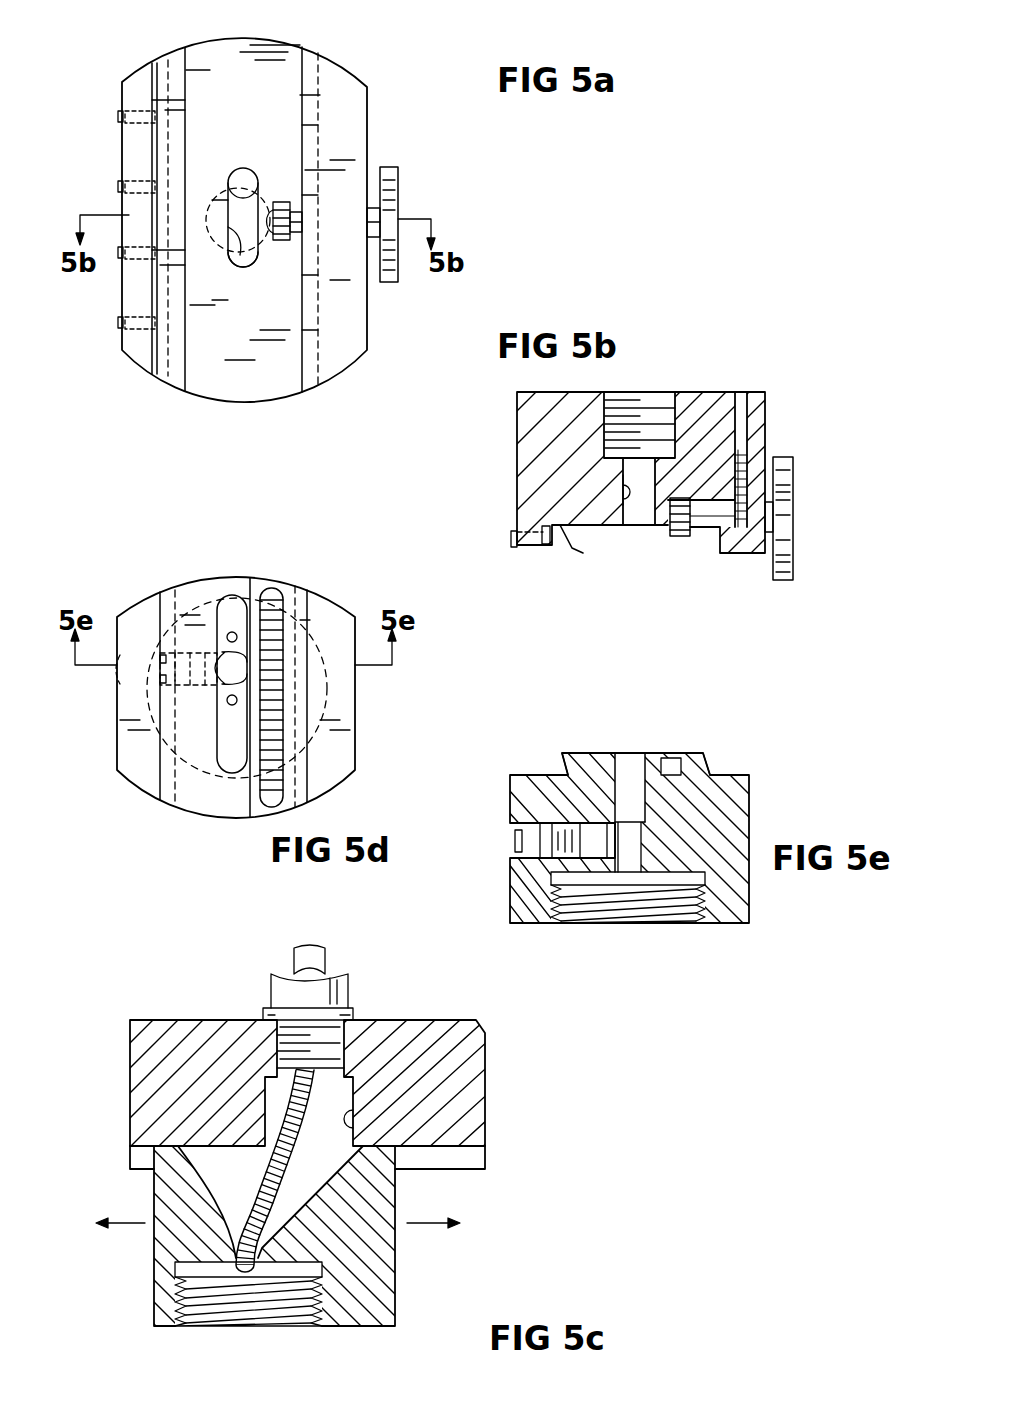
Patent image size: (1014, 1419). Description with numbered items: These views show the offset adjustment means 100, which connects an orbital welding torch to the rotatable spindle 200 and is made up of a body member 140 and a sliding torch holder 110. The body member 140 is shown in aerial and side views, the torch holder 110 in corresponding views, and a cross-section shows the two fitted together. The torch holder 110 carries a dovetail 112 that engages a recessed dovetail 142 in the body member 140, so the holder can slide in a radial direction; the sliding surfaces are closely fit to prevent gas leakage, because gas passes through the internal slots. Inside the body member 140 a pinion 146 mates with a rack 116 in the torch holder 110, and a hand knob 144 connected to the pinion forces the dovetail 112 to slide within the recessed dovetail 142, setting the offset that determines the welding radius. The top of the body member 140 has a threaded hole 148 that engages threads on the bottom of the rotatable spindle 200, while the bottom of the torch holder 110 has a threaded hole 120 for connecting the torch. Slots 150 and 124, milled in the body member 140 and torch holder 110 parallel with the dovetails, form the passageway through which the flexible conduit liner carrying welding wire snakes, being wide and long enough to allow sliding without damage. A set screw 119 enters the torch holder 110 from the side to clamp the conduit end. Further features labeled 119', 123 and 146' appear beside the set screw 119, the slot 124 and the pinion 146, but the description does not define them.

In FIG. 5C, the offset adjustment means 100 is at (120, 998).
In FIG. 5D, the sliding torch holder 110 is at (251, 673).
In FIG. 5E, the sliding torch holder 110 is at (664, 824).
In FIG. 5C, the sliding torch holder 110 is at (405, 1281).
In FIG. 5D, the dovetail 112 is at (162, 780).
In FIG. 5E, the dovetail 112 is at (562, 751).
In FIG. 5D, the rack 116 is at (272, 595).
In FIG. 5E, the rack 116 is at (669, 765).
In FIG. 5D, the set screw 119 is at (144, 692).
In FIG. 5E, the set screw 119 is at (537, 861).
In FIG. 5D, the detent 119' is at (106, 633).
In FIG. 5E, the detent 119' is at (512, 819).
In FIG. 5D, the threaded hole 120 is at (178, 585).
In FIG. 5E, the threaded hole 120 is at (690, 908).
In FIG. 5C, the threaded hole 120 is at (207, 1315).
In FIG. 5D, the apertures 123 is at (232, 632).
In FIG. 5D, the slot 124 is at (245, 764).
In FIG. 5E, the slot 124 is at (634, 773).
In FIG. 5C, the slot 124 is at (323, 1171).
In FIG. 5A, the body member 140 is at (305, 216).
In FIG. 5B, the body member 140 is at (646, 451).
In FIG. 5C, the body member 140 is at (120, 1086).
In FIG. 5A, the recessed dovetail 142 is at (190, 58).
In FIG. 5B, the recessed dovetail 142 is at (578, 548).
In FIG. 5C, the recessed dovetail 142 is at (478, 1170).
In FIG. 5A, the hand knob 144 is at (399, 253).
In FIG. 5B, the hand knob 144 is at (793, 490).
In FIG. 5A, the pinion 146 is at (285, 244).
In FIG. 5B, the pinion 146 is at (665, 533).
In FIG. 5A, the screw bore 146' is at (281, 189).
In FIG. 5B, the screw bore 146' is at (718, 488).
In FIG. 5A, the threaded hole 148 is at (232, 172).
In FIG. 5B, the threaded hole 148 is at (672, 418).
In FIG. 5A, the slot 150 is at (238, 262).
In FIG. 5B, the slot 150 is at (625, 485).
In FIG. 5C, the slot 150 is at (352, 1112).
In FIG. 5C, the rotatable spindle 200 is at (360, 990).